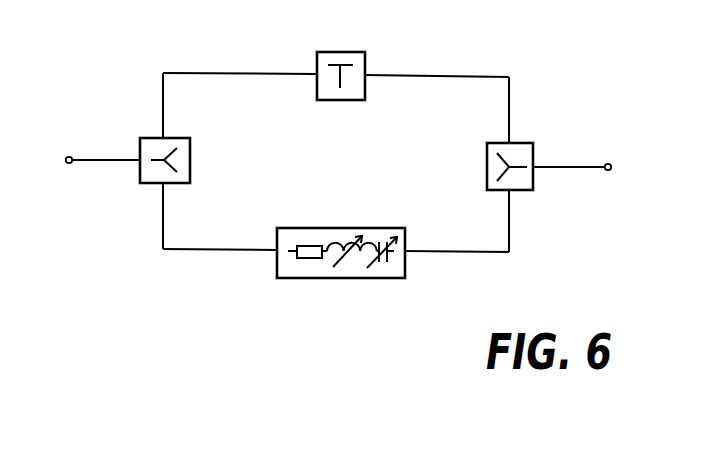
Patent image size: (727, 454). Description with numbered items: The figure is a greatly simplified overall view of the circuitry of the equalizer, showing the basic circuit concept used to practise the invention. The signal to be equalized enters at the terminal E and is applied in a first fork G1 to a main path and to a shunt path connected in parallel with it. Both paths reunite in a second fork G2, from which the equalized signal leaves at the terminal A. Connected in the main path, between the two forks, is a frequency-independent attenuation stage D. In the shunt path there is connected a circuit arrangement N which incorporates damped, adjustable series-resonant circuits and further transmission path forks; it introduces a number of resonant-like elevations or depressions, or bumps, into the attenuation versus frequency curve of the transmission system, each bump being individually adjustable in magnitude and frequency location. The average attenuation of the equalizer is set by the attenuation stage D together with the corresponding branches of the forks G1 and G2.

The input terminal E is at (91, 162).
The output terminal A is at (582, 169).
The first fork G1 is at (185, 160).
The second fork G2 is at (488, 166).
The frequency-independent attenuation stage D is at (341, 60).
The circuit arrangement N is at (341, 264).